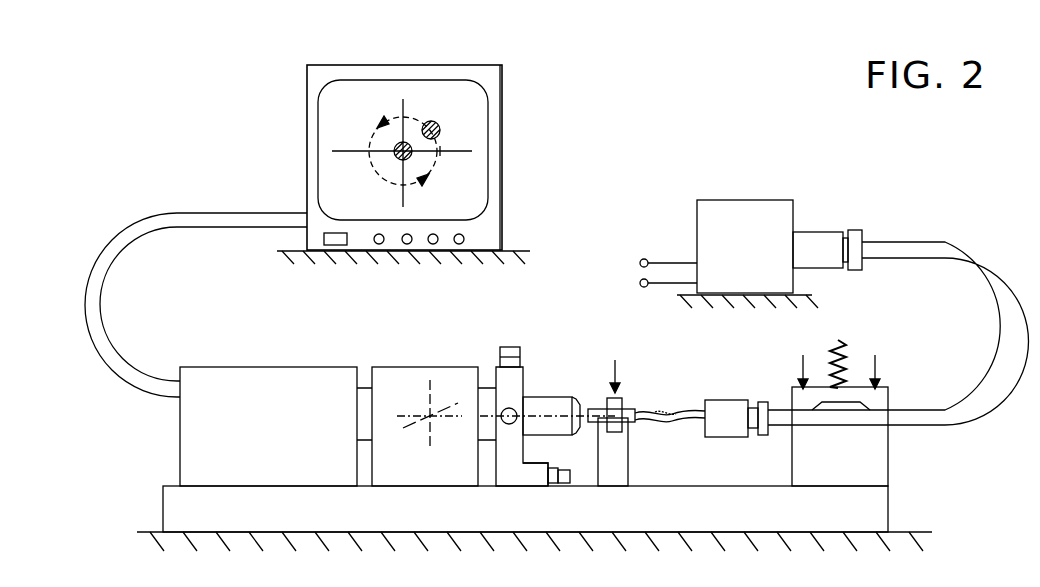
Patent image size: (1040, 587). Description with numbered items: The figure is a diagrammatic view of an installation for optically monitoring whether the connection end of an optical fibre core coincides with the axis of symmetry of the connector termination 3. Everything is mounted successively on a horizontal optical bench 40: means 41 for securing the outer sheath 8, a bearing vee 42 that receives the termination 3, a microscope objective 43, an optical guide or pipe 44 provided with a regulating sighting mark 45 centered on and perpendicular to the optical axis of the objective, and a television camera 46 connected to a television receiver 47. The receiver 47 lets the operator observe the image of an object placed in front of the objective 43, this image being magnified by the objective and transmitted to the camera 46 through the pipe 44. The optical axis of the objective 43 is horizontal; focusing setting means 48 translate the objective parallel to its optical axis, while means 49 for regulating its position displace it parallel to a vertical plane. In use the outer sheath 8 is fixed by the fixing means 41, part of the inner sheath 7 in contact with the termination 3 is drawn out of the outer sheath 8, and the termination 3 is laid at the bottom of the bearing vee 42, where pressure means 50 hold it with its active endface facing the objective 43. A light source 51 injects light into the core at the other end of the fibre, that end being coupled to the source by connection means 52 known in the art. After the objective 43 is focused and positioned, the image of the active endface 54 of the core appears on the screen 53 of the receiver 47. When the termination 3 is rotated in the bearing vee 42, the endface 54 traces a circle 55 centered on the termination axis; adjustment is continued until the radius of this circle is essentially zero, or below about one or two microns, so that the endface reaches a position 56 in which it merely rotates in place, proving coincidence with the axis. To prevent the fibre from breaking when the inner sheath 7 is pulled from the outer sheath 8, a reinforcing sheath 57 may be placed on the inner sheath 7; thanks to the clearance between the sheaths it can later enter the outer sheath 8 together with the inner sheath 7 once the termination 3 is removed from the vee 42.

The termination 3 is at (634, 418).
The inner sheath 7 is at (691, 428).
The outer sheath 8 is at (950, 418).
The horizontal optical bench 40 is at (180, 502).
The means for securing the outer sheath 41 is at (862, 467).
The bearing vee 42 is at (631, 468).
The microscope objective 43 is at (552, 403).
The optical guide or pipe 44 is at (453, 467).
The regulating sighting mark 45 is at (342, 152).
The television camera 46 is at (280, 445).
The television receiver 47 is at (322, 64).
The focusing setting means 48 is at (523, 475).
The means for regulating the position of the objective 49 is at (512, 377).
The pressure means 50 is at (623, 398).
The light source 51 is at (750, 256).
The connection means 52 is at (858, 240).
The screen 53 is at (468, 88).
The active endface 54 is at (441, 130).
The circle 55 is at (440, 163).
The position 56 is at (396, 160).
The reinforcing sheath 57 is at (677, 418).